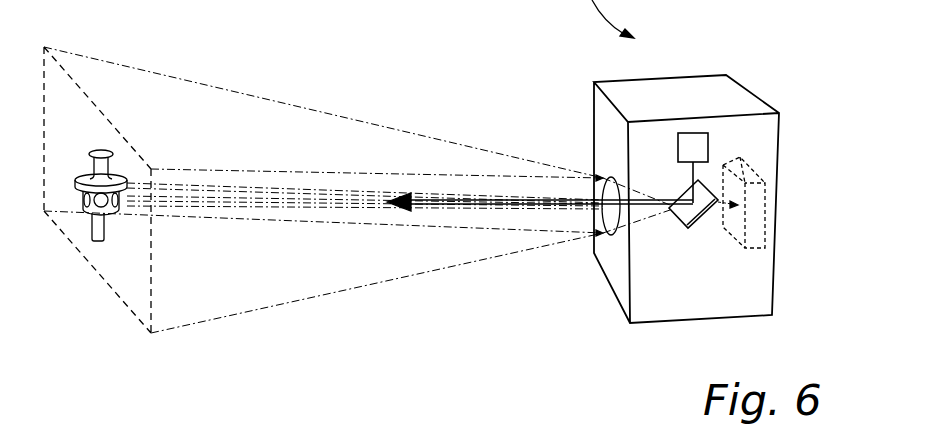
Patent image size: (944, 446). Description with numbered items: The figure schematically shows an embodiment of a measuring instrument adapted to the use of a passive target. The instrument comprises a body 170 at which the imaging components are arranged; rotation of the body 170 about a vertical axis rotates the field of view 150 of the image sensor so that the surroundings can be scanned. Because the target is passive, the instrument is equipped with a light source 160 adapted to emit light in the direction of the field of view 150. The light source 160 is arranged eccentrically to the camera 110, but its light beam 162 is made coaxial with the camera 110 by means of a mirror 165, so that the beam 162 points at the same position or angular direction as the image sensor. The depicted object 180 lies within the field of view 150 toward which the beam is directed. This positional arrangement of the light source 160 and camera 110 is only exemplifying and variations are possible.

The camera 110 is at (752, 170).
The field of view 150 is at (315, 135).
The light source 160 is at (693, 133).
The light beam 162 is at (452, 197).
The mirror 165 is at (692, 231).
The body 170 is at (662, 325).
The tool / object 180 is at (117, 179).